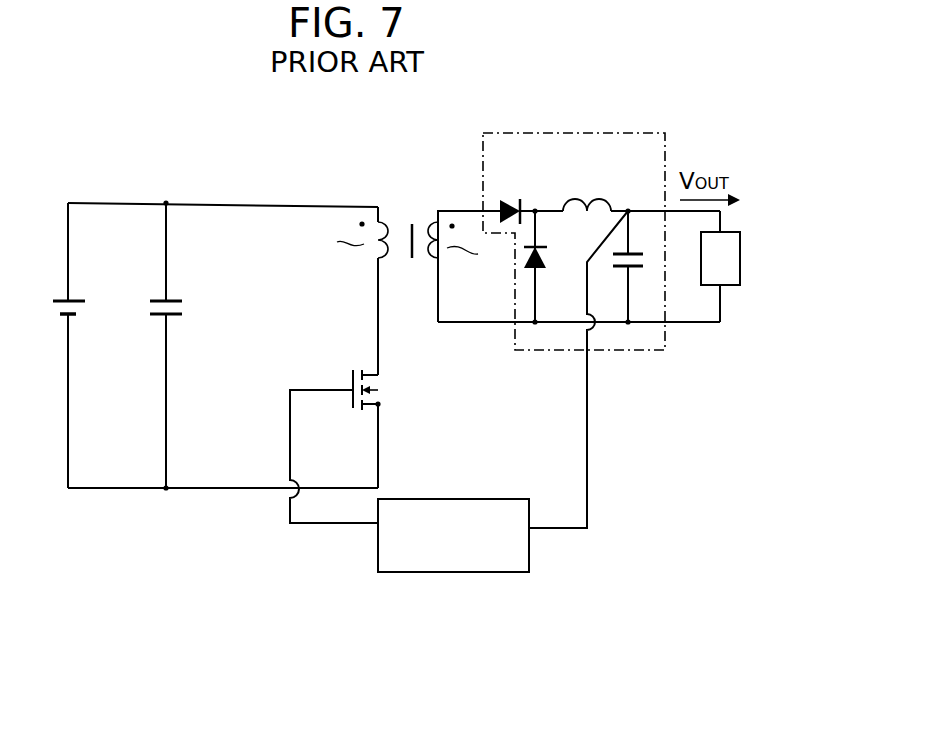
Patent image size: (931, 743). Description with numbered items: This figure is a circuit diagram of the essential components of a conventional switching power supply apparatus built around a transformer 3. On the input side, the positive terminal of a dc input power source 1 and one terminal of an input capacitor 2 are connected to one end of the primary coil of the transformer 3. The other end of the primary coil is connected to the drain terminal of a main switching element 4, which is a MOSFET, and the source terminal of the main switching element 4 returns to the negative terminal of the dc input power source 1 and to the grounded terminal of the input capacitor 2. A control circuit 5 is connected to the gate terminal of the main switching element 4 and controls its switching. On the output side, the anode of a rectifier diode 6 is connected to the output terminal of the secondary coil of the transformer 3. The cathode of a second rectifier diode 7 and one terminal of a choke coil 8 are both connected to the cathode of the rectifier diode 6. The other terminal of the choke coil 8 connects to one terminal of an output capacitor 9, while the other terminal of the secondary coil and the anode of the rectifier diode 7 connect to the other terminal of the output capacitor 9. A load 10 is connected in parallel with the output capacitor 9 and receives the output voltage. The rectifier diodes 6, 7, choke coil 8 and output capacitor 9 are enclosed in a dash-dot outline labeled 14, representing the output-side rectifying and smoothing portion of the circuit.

The dc input power source 1 is at (74, 300).
The input capacitor 2 is at (172, 300).
The transformer 3 is at (412, 205).
The main switching element 4 is at (386, 385).
The control circuit 5 is at (444, 498).
The rectifier diode 6 is at (510, 200).
The rectifier diode 7 is at (548, 254).
The choke coil 8 is at (587, 198).
The output capacitor 9 is at (637, 270).
The load 10 is at (722, 228).
The rectifying and smoothing circuit 14 is at (582, 133).